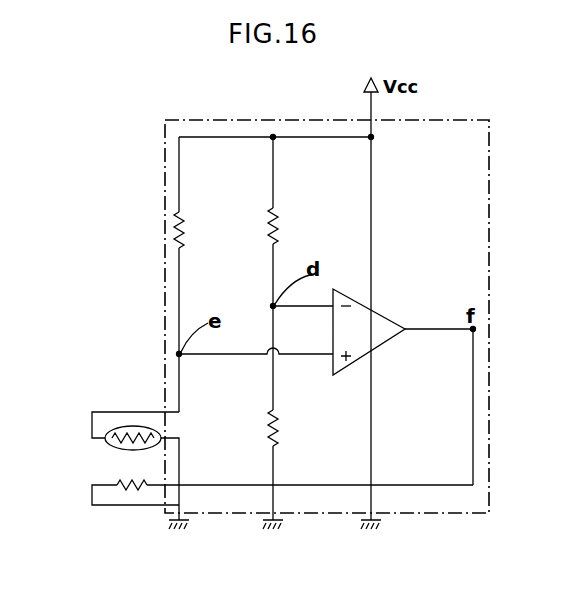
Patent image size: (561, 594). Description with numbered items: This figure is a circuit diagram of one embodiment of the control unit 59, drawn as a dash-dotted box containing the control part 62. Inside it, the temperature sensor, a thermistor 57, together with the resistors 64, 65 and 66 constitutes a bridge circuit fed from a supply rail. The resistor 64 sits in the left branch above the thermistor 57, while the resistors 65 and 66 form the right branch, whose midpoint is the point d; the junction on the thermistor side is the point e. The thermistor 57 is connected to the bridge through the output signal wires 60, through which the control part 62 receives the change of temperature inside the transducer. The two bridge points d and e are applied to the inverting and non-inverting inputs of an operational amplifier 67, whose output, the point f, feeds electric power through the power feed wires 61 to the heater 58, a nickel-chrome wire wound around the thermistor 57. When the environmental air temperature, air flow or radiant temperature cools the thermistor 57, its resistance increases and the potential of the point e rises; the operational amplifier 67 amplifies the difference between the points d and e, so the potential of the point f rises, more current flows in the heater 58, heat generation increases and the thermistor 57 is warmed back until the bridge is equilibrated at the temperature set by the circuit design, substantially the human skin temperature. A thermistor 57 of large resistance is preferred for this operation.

The thermistor 57 is at (128, 450).
The nickel-chrome wire heater 58 is at (115, 480).
The control unit 59 is at (494, 113).
The output signal wires 60 is at (158, 420).
The power feed wires 61 is at (150, 497).
The control part 62 is at (207, 126).
The resistor 64 is at (172, 240).
The resistor 65 is at (282, 223).
The resistor 66 is at (282, 428).
The operational amplifier 67 is at (382, 335).